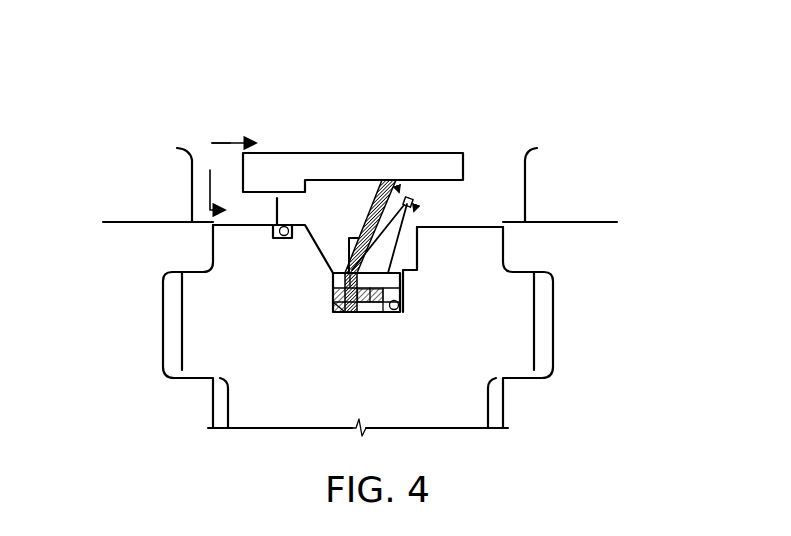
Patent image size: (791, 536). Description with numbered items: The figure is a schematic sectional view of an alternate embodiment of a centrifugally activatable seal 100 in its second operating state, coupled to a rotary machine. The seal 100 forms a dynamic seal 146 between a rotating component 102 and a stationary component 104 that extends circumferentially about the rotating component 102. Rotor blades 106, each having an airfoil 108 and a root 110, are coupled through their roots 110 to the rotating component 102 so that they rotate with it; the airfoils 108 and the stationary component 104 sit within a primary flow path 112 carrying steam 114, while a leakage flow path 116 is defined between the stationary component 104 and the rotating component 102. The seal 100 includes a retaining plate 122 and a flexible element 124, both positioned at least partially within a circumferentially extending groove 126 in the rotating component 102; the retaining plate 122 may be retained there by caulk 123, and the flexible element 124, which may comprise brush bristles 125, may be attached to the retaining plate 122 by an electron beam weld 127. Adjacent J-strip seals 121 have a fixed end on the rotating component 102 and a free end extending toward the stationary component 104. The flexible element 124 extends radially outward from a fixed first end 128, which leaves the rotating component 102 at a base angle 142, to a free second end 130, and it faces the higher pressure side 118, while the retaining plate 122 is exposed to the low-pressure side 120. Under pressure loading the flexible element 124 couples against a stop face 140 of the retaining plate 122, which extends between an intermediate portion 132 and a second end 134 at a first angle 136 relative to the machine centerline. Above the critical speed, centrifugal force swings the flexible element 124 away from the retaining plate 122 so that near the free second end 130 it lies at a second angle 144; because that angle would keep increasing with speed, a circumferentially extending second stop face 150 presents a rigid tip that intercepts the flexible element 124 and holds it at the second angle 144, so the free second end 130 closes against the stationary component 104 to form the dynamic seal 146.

The centrifugally activatable seal 100 is at (201, 36).
The rotating component 102 is at (215, 295).
The stationary component 104 is at (432, 178).
The rotor blades 106 is at (97, 173).
The airfoil 108 is at (178, 210).
The root 110 is at (135, 345).
The primary flow path 112 is at (237, 141).
The steam 114 is at (254, 114).
The leakage flow path 116 is at (218, 168).
The higher pressure side 118 is at (267, 196).
The low-pressure side 120 is at (515, 159).
The J-strip seals 121 is at (266, 240).
The retaining plate 122 is at (406, 291).
The caulk 123 is at (403, 314).
The flexible element 124 is at (350, 240).
The brush bristles 125 is at (343, 180).
The circumferentially extending groove 126 is at (420, 222).
The electron beam weld 127 is at (358, 314).
The first end 128 is at (333, 295).
The free second end 130 is at (353, 172).
The intermediate portion 132 is at (410, 268).
The second end 134 is at (413, 199).
The first angle 136 is at (415, 207).
The stop face 140 is at (414, 246).
The base angle 142 is at (330, 311).
The second angle 144 is at (398, 182).
The dynamic seal 146 is at (372, 181).
The second stop face 150 is at (346, 262).